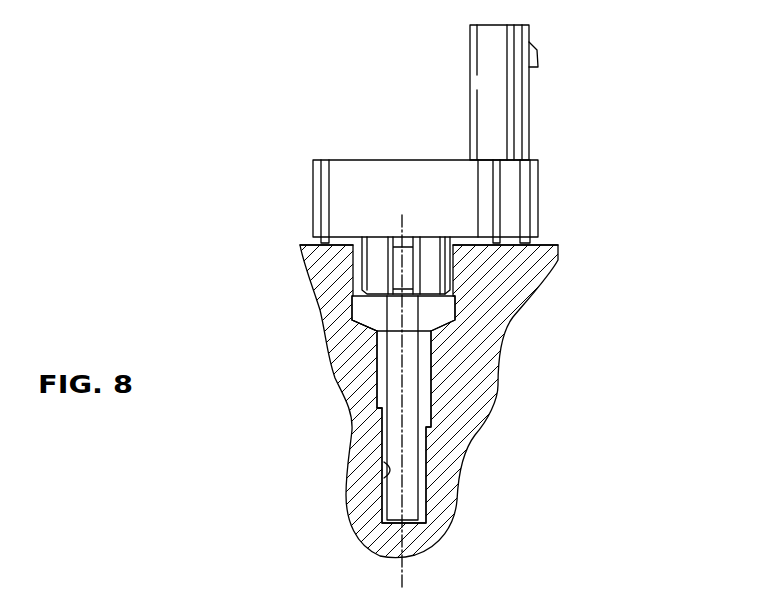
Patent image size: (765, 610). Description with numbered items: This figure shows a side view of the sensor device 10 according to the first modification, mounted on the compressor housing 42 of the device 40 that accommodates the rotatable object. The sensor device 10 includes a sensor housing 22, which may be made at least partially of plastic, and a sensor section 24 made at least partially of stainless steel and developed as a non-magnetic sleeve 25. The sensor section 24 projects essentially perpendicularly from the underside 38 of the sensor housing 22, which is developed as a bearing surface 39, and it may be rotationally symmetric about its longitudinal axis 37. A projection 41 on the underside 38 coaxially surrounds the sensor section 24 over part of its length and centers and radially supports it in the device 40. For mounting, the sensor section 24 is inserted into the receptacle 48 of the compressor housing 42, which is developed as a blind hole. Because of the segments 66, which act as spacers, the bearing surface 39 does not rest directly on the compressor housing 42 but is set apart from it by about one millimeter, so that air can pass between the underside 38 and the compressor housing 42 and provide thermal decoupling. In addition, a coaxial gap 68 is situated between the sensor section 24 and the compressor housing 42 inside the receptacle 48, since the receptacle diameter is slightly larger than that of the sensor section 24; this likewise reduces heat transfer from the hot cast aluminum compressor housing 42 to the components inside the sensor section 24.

The sensor device 10 is at (617, 110).
The sensor housing 22 is at (510, 203).
The sensor section 24 is at (409, 409).
The non-magnetic sleeve 25 is at (409, 409).
The longitudinal axis 37 is at (402, 573).
The underside 38 is at (382, 398).
The bearing surface 39 is at (520, 247).
The device 40 is at (382, 398).
The projection 41 is at (438, 271).
The compressor housing 42 is at (382, 398).
The receptacle 48 is at (384, 474).
The segments 66 is at (397, 243).
The coaxial gap 68 is at (367, 309).